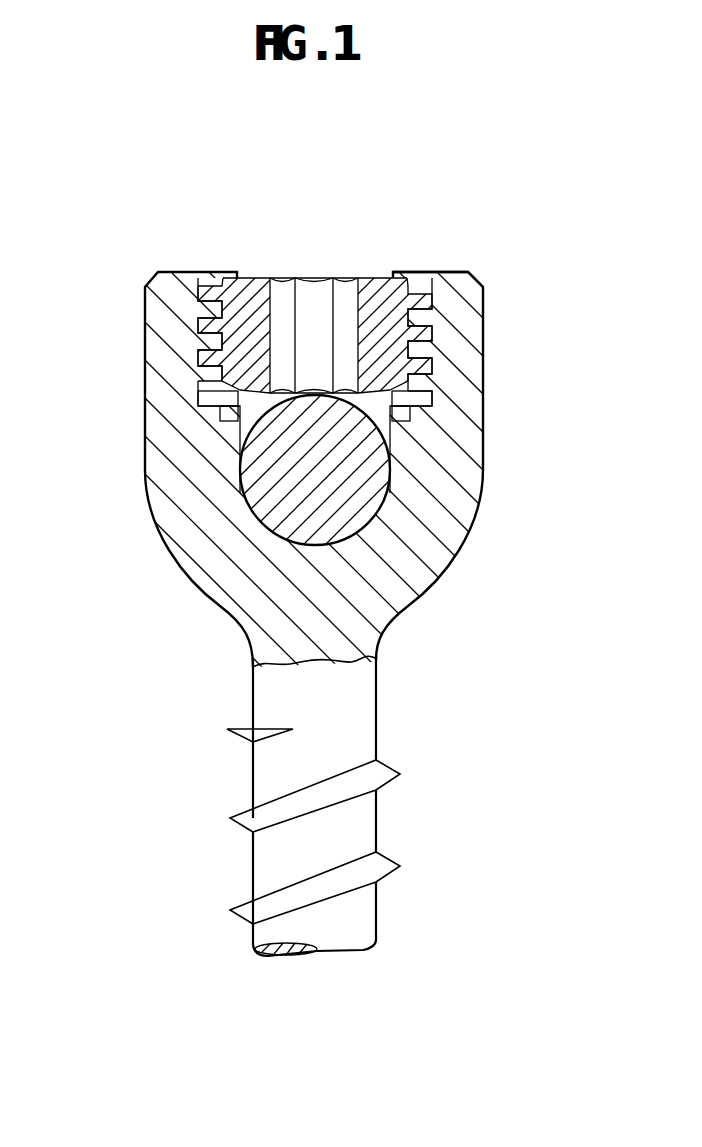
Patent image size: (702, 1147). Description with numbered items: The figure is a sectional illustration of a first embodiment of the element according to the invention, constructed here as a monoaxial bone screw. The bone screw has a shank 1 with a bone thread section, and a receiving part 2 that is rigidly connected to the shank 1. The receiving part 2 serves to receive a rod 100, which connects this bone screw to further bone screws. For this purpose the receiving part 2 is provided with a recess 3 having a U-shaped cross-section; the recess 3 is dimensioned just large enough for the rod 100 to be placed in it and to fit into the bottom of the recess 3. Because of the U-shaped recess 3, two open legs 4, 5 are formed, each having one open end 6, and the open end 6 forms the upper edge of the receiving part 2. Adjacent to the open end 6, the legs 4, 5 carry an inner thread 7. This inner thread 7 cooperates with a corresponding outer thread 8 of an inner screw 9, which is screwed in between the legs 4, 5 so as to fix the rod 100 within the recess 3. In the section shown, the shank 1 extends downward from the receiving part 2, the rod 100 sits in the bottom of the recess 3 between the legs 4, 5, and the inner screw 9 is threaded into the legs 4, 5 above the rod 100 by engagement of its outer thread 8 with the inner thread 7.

The shank 1 is at (363, 825).
The receiving part 2 is at (457, 542).
The recess 3 is at (240, 414).
The leg 4 is at (160, 352).
The leg 5 is at (468, 333).
The open end 6 is at (443, 271).
The inner thread 7 is at (213, 303).
The outer thread 8 is at (210, 286).
The inner screw 9 is at (376, 303).
The rod 100 is at (275, 495).